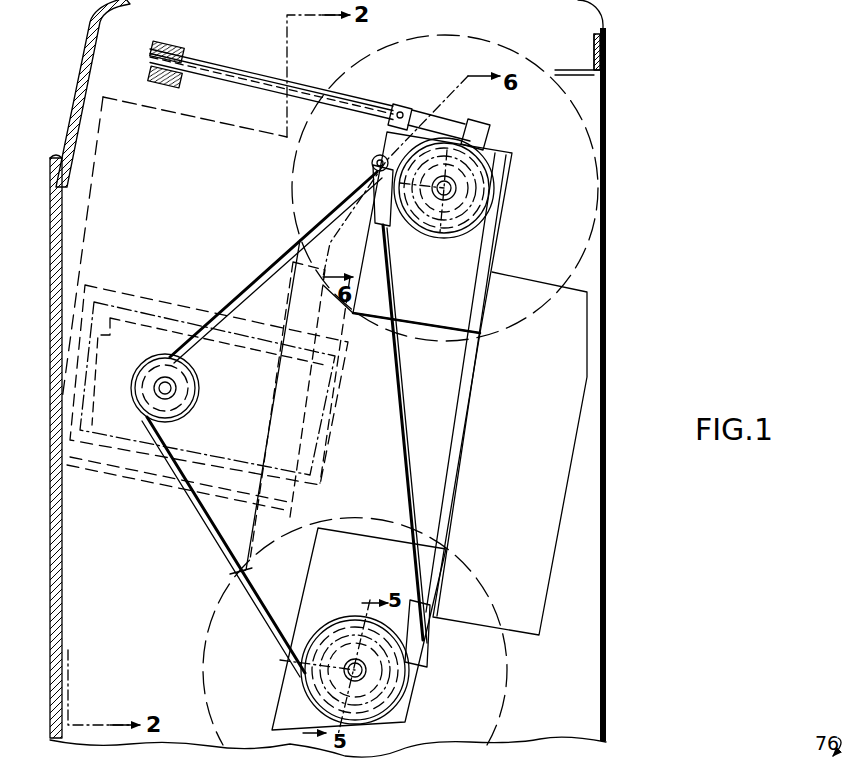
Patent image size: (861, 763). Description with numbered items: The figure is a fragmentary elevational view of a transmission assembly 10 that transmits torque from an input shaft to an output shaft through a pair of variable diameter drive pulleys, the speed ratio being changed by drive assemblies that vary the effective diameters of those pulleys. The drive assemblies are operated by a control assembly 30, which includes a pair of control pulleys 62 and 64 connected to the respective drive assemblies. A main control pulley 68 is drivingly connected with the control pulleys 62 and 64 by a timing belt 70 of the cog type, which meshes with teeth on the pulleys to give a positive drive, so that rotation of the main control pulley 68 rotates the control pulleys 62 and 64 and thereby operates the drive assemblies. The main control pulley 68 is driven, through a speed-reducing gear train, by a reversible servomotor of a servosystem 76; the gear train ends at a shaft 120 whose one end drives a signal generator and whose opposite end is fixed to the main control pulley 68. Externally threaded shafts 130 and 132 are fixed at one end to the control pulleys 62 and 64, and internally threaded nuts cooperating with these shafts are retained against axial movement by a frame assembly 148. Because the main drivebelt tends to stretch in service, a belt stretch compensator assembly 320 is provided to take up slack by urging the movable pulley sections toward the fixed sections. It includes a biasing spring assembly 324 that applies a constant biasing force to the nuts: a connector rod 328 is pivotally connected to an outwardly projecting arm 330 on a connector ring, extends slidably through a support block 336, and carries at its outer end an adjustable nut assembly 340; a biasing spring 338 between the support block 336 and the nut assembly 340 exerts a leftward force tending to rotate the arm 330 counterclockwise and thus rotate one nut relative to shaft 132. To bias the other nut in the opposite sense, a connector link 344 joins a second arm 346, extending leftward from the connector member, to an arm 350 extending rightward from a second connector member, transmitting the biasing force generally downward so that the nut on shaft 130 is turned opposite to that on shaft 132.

The transmission assembly 10 is at (747, 107).
The control assembly 30 is at (527, 266).
The control pulley 62 is at (395, 690).
The control pulley 64 is at (482, 188).
The main control pulley 68 is at (195, 392).
The timing belt 70 is at (253, 277).
The servosystem 76 is at (167, 268).
The shaft 120 is at (160, 385).
The externally threaded shaft 130 is at (349, 666).
The externally threaded shaft 132 is at (444, 188).
The frame assembly 148 is at (593, 262).
The belt stretch compensator assembly 320 is at (420, 478).
The biasing spring assembly 324 is at (385, 86).
The connector rod 328 is at (272, 78).
The outwardly projecting arm 330 is at (484, 138).
The support block 336 is at (393, 120).
The biasing spring 338 is at (338, 60).
The adjustable nut assembly 340 is at (177, 50).
The connector link 344 is at (403, 450).
The second arm 346 is at (371, 165).
The arm 350 is at (420, 655).